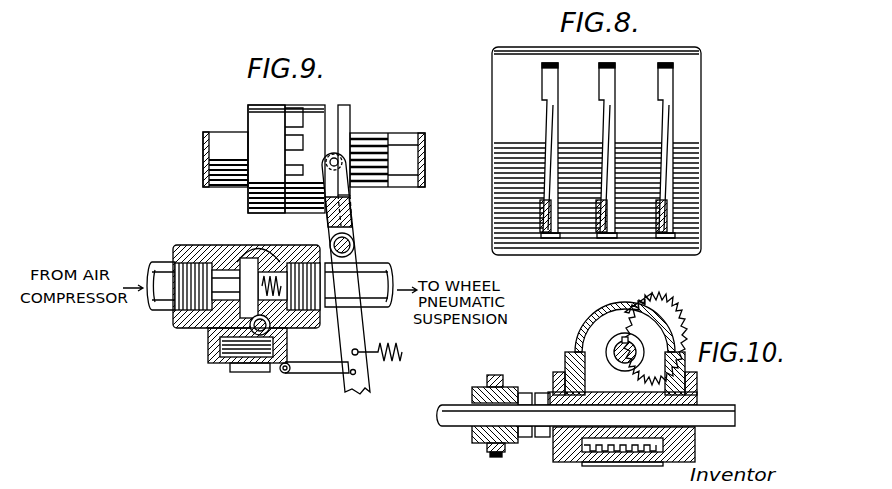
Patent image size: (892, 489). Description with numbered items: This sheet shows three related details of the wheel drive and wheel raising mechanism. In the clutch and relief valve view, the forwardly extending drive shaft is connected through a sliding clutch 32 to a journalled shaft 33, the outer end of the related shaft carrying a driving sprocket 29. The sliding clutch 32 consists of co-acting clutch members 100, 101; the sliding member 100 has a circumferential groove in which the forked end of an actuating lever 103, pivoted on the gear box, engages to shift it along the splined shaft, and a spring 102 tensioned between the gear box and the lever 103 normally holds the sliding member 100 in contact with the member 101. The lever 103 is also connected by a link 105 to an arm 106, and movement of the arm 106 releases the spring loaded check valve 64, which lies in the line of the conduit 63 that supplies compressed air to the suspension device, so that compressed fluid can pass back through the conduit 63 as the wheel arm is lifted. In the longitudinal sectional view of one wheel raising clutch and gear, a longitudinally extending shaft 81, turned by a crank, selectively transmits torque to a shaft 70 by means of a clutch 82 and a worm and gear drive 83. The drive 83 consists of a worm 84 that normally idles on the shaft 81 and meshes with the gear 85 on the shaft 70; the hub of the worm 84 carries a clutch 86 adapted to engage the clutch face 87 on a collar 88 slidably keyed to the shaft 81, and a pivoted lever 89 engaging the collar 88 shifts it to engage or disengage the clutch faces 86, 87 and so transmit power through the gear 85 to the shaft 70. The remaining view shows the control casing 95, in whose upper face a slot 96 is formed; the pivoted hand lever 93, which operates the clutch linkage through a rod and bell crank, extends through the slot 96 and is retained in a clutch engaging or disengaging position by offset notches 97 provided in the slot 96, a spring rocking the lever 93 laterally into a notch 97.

In FIG. 9, the driving sprocket 29 is at (415, 153).
In FIG. 9, the sliding clutch 32 is at (326, 97).
In FIG. 9, the shaft 33 is at (206, 162).
In FIG. 9, the conduit 63 is at (157, 306).
In FIG. 9, the spring loaded check valve 64 is at (222, 246).
In FIG. 10, the shaft 70 is at (636, 348).
In FIG. 10, the longitudinally extending shaft 81 is at (725, 405).
In FIG. 10, the clutch 82 is at (492, 407).
In FIG. 10, the worm and gear drive 83 is at (575, 322).
In FIG. 10, the worm 84 is at (655, 455).
In FIG. 10, the gear 85 is at (662, 322).
In FIG. 10, the clutch 86 is at (540, 393).
In FIG. 10, the clutch face 87 is at (527, 438).
In FIG. 10, the collar 88 is at (476, 387).
In FIG. 10, the pivoted lever 89 is at (498, 375).
In FIG. 8, the hand lever 93 is at (598, 240).
In FIG. 8, the casing 95 is at (492, 90).
In FIG. 8, the slot 96 is at (547, 118).
In FIG. 8, the offset notches 97 is at (542, 82).
In FIG. 9, the sliding member 100 is at (322, 123).
In FIG. 9, the clutch member 101 is at (250, 112).
In FIG. 9, the spring 102 is at (402, 354).
In FIG. 9, the actuating lever 103 is at (372, 372).
In FIG. 9, the link 105 is at (327, 375).
In FIG. 9, the arm 106 is at (280, 373).